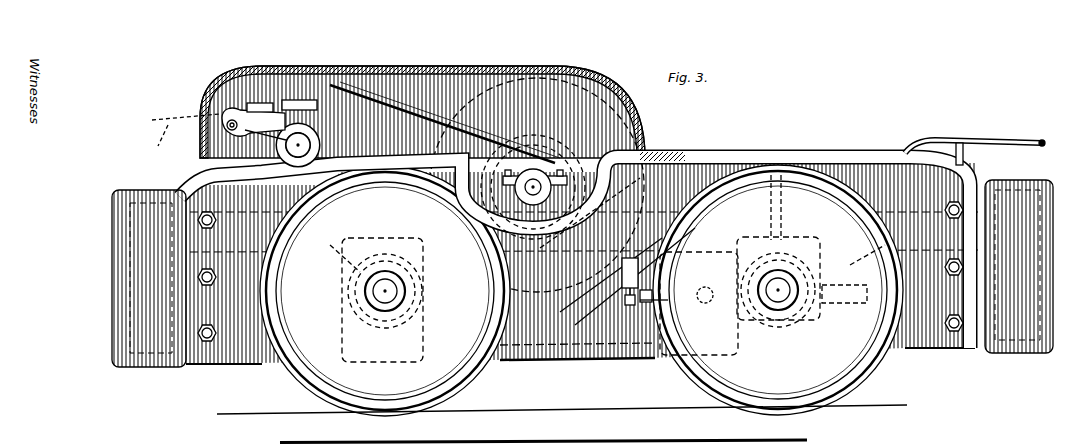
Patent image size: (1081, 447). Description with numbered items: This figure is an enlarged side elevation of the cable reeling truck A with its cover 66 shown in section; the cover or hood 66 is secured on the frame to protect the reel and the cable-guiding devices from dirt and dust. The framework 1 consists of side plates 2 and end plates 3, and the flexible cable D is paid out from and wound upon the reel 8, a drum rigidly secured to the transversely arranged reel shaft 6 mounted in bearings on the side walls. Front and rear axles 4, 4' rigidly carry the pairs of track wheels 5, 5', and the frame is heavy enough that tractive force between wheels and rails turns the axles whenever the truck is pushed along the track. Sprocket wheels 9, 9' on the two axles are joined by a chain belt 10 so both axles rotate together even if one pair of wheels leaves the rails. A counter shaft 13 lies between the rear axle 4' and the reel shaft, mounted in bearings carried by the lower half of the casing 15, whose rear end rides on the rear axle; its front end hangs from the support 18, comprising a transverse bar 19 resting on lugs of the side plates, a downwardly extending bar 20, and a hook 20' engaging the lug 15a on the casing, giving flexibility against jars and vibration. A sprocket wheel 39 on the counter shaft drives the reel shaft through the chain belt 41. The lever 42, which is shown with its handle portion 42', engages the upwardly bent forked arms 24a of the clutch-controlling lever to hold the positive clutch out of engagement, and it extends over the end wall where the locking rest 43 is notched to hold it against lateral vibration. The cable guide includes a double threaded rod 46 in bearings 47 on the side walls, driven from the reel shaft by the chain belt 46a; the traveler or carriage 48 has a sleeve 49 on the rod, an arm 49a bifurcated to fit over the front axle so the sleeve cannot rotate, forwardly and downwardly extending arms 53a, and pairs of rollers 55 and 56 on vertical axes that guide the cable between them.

The framework 1 is at (583, 243).
The side plates 2 is at (570, 360).
The end plates 3 is at (114, 336).
The front axle 4 is at (412, 298).
The rear axle 4' is at (780, 315).
The track wheels 5 is at (385, 291).
The track wheels 5' is at (778, 290).
The reel shaft 6 is at (556, 168).
The reel 8 is at (596, 96).
The sprocket wheel 9 is at (369, 300).
The sprocket wheel 9' is at (758, 303).
The chain belt 10 is at (538, 362).
The counter shaft 13 is at (710, 288).
The casing 15 is at (793, 242).
The lug 15a is at (662, 303).
The support 18 is at (620, 300).
The transversely arranged bar 19 is at (636, 258).
The downwardly extending bar 20 is at (612, 316).
The hook 20' is at (638, 313).
The bifurcated arms 24a is at (866, 277).
The sprocket wheel 39 is at (732, 242).
The chain belt 41 is at (692, 150).
The lever 42 is at (973, 132).
The lever handle 42' is at (1022, 129).
The locking rest 43 is at (965, 158).
The double threaded rod 46 is at (429, 183).
The chain belt 46a is at (518, 140).
The bearings 47 is at (265, 147).
The traveler 48 is at (202, 148).
The sleeve 49 is at (340, 82).
The arm 49a is at (330, 237).
The arms 53a is at (222, 115).
The rollers 55 is at (250, 102).
The rollers 56 is at (302, 99).
The cover 66 is at (470, 67).
The cable reeling truck A is at (584, 185).
The flexible cable D is at (186, 130).